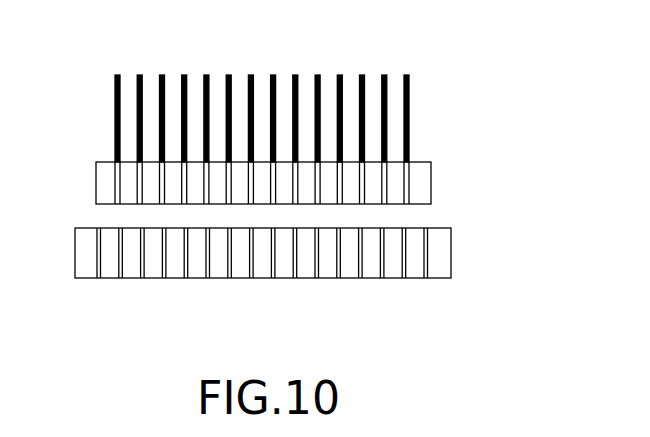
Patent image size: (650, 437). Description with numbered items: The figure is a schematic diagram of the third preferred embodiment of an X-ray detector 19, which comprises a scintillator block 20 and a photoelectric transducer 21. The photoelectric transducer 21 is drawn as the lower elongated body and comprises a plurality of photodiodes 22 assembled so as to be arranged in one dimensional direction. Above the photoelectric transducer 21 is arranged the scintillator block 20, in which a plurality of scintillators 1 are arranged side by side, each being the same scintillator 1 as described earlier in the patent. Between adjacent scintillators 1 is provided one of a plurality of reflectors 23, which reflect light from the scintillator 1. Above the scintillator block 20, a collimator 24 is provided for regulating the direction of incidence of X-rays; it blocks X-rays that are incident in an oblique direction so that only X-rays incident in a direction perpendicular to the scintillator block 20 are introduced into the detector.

The X-ray detector 19 is at (498, 126).
The scintillator block 20 is at (440, 184).
The photoelectric transducer 21 is at (465, 257).
The photodiodes 22 is at (391, 268).
The reflectors 23 is at (159, 205).
The collimator 24 is at (295, 75).
The scintillator 1 is at (418, 163).